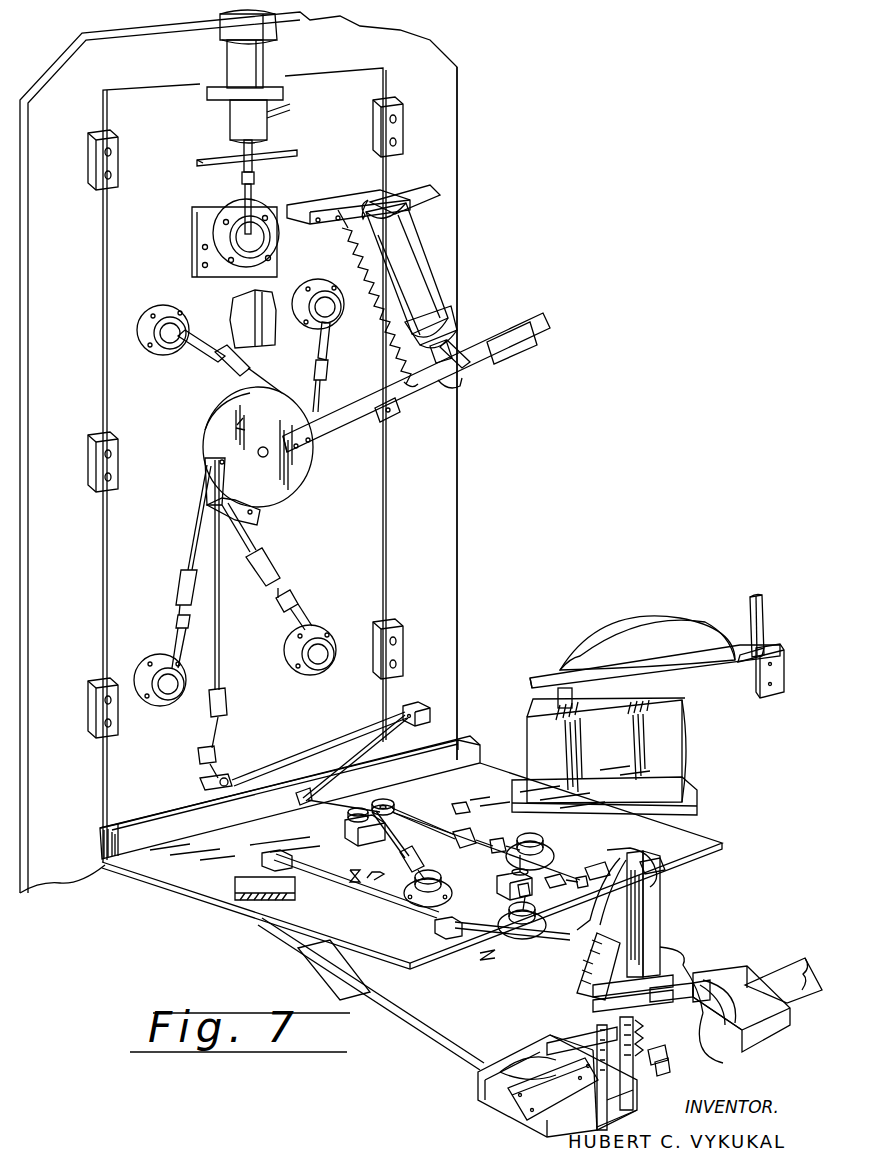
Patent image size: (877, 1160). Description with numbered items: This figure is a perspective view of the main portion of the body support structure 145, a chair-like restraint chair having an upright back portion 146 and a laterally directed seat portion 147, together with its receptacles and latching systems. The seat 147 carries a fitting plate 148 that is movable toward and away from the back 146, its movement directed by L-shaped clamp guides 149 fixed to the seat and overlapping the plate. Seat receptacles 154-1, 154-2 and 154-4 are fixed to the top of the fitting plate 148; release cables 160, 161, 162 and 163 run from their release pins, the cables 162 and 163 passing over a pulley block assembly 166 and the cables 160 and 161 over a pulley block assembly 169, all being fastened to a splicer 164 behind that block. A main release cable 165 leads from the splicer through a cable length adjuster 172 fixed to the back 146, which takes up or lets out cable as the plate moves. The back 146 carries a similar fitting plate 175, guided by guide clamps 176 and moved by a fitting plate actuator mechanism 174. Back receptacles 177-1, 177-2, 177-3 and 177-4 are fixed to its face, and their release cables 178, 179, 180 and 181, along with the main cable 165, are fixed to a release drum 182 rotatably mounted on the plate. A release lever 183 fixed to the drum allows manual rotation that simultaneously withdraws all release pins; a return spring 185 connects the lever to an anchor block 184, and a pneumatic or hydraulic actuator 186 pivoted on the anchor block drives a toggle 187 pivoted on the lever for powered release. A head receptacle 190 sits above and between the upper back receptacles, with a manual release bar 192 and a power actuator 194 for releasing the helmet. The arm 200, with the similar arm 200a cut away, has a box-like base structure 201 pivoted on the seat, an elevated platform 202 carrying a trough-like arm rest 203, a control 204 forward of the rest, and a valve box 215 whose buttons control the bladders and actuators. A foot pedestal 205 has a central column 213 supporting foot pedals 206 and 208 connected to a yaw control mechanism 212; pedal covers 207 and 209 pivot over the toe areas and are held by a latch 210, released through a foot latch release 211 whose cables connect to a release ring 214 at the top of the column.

The body support structure 145 is at (468, 116).
The back portion 146 is at (453, 238).
The seat portion 147 is at (182, 880).
The fitting plate 148 is at (368, 885).
The L-shaped clamp guides 149 is at (450, 940).
The seat receptacle 154-1 is at (422, 905).
The seat receptacle 154-2 is at (555, 812).
The seat receptacle 154-4 is at (525, 935).
The release cable 160 is at (380, 846).
The release cable 161 is at (428, 820).
The release cable 162 is at (550, 878).
The release cable 163 is at (525, 890).
The splicer 164 is at (382, 805).
The main release cable 165 is at (296, 758).
The pulley block assembly 166 is at (500, 890).
The pulley block assembly 169 is at (345, 831).
The cable length adjuster 172 is at (432, 720).
The fitting plate actuator mechanism 174 is at (245, 310).
The back fitting plate 175 is at (380, 516).
The back fitting plate guide clamps 176 is at (96, 186).
The back receptacle 177-1 is at (155, 355).
The back receptacle 177-2 is at (336, 322).
The back receptacle 177-3 is at (322, 628).
The back receptacle 177-4 is at (165, 707).
The release cable 178 is at (225, 372).
The release cable 179 is at (322, 376).
The release cable 180 is at (283, 585).
The release cable 181 is at (196, 524).
The release drum 182 is at (262, 503).
The release lever 183 is at (333, 426).
The anchor block 184 is at (388, 196).
The return spring 185 is at (358, 248).
The actuator 186 is at (428, 292).
The toggle 187 is at (453, 389).
The head receptacle 190 is at (218, 228).
The manual release bar 192 is at (297, 162).
The actuator 194 is at (270, 60).
The arm 200 is at (692, 745).
The arm 200a is at (268, 905).
The base structure 201 is at (692, 801).
The platform 202 is at (553, 645).
The arm rest 203 is at (686, 630).
The control 204 is at (765, 622).
The foot pedestal 205 is at (662, 918).
The foot pedal 206 is at (490, 1105).
The pedal cover 207 is at (522, 1118).
The foot pedal 208 is at (740, 966).
The pedal cover 209 is at (800, 972).
The latch 210 is at (723, 1063).
The foot latch release 211 is at (672, 970).
The yaw control mechanism 212 is at (642, 1062).
The central column 213 is at (596, 998).
The release ring 214 is at (655, 873).
The valve box 215 is at (780, 690).